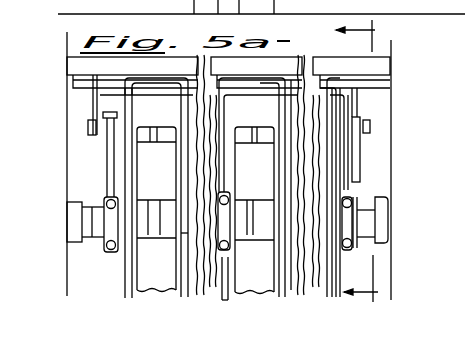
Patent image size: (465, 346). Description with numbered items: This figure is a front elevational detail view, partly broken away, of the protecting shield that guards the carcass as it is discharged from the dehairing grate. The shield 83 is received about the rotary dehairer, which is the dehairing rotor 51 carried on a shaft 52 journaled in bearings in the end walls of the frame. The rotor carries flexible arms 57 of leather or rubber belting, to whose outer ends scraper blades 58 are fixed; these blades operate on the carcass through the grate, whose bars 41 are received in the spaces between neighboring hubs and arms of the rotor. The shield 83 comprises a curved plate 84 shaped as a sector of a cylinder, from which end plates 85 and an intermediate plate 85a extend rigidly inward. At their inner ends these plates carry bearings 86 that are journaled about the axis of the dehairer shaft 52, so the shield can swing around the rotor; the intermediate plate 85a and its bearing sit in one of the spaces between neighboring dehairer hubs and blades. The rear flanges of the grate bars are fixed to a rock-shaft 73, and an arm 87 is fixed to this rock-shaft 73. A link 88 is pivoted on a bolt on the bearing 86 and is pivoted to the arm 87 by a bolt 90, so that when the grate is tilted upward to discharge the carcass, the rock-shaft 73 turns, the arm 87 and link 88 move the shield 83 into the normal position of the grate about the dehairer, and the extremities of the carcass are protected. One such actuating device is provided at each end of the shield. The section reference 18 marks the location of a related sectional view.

The rock-shaft 73 is at (80, 68).
The curved plate 84 is at (133, 98).
The intermediate plate 85a is at (220, 127).
The flexible arms 57 is at (156, 208).
The scraper blades 58 is at (266, 138).
The arm 87 is at (97, 108).
The shaft 52 is at (90, 212).
The bearings 86 is at (110, 242).
The bars 41 is at (126, 280).
The dehairing rotor 51 is at (171, 292).
The shield 83 is at (348, 112).
The bolt 90 is at (370, 126).
The end plates 85 is at (340, 157).
The link 88 is at (355, 167).
The section line 18 is at (349, 161).